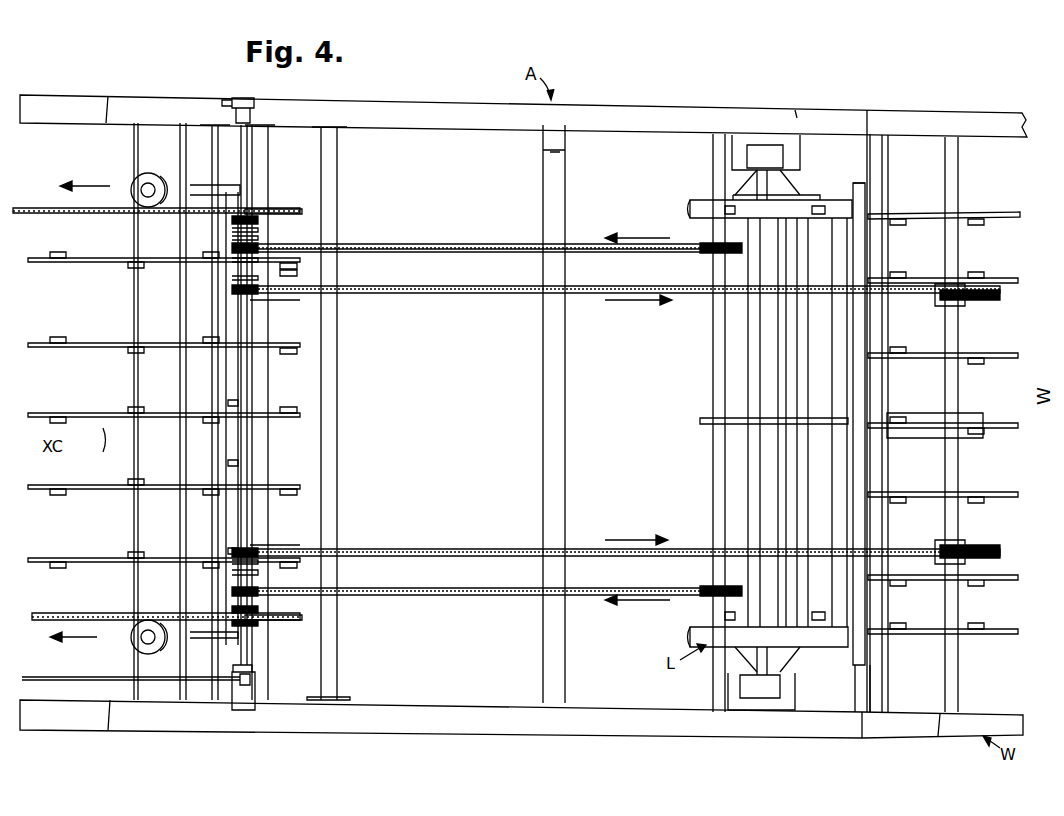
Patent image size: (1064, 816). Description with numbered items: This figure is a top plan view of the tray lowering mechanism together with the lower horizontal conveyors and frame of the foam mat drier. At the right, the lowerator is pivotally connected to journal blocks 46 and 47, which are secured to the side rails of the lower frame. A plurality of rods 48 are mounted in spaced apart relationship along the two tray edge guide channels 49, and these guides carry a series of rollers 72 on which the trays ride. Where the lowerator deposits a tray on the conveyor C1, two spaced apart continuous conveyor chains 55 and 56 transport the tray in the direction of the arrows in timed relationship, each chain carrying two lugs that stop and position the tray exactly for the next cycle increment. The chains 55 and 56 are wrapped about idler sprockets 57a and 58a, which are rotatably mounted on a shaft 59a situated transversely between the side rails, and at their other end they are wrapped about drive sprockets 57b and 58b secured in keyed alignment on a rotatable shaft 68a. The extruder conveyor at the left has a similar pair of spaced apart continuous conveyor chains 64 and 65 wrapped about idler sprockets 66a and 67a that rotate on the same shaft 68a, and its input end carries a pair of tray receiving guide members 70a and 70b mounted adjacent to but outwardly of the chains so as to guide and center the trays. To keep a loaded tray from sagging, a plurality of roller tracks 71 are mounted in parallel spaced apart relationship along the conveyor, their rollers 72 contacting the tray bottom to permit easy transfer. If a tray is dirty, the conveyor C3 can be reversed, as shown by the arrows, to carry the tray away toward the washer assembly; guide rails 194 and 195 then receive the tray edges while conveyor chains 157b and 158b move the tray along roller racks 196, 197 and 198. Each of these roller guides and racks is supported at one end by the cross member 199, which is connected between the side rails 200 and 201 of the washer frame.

The side rail 201 is at (905, 122).
The side rail 200 is at (943, 730).
The cross member 199 is at (878, 690).
The roller rack 198 is at (1005, 288).
The roller rack 197 is at (1003, 360).
The roller rack 196 is at (1003, 430).
The guide rail 195 is at (982, 213).
The guide rail 194 is at (1008, 636).
The conveyor chain 65 is at (27, 213).
The conveyor chain 64 is at (98, 612).
The roller track 71 is at (106, 258).
The roller 72 is at (140, 268).
The conveyor chain 56 is at (514, 246).
The conveyor chain 55 is at (490, 597).
The conveyor C1 is at (445, 587).
The conveyor C3 is at (445, 548).
The conveyor chain 158b is at (366, 295).
The conveyor chain 157b is at (372, 538).
The idler sprocket 67a is at (262, 214).
The tray receiving guide member 70b is at (284, 215).
The drive sprocket 58b is at (270, 258).
The drive sprocket 57b is at (270, 577).
The tray receiving guide member 70a is at (286, 620).
The idler sprocket 66a is at (268, 624).
The rotatable shaft 68a is at (262, 372).
The shaft 59a is at (715, 372).
The idler sprocket 58a is at (720, 258).
The idler sprocket 57a is at (708, 581).
The tray edge guide channel 49 is at (700, 205).
The rod 48 is at (775, 487).
The journal block 47 is at (778, 154).
The journal block 46 is at (785, 688).